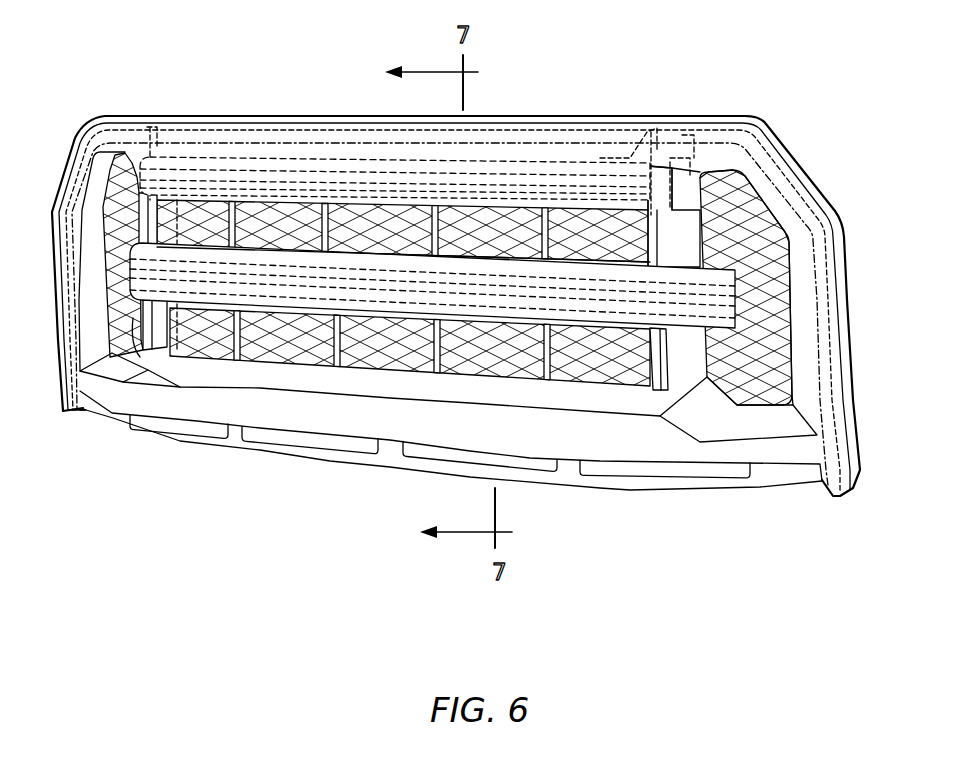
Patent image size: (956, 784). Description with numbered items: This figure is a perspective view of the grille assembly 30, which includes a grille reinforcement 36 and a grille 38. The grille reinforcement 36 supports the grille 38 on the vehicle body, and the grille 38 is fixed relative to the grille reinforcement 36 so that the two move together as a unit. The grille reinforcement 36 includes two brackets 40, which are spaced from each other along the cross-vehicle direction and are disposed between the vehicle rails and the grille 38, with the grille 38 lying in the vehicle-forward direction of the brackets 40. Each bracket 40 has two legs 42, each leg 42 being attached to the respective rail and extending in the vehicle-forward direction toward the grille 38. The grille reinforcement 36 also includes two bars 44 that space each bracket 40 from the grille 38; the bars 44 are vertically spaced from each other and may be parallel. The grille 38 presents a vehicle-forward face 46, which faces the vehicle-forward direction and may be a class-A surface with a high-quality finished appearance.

The grille assembly 30 is at (549, 60).
The grille reinforcement 36 is at (240, 157).
The grille 38 is at (800, 268).
The bracket 40 is at (93, 114).
The leg 42 is at (150, 124).
The bar 44 is at (318, 330).
The vehicle-forward face 46 is at (684, 148).